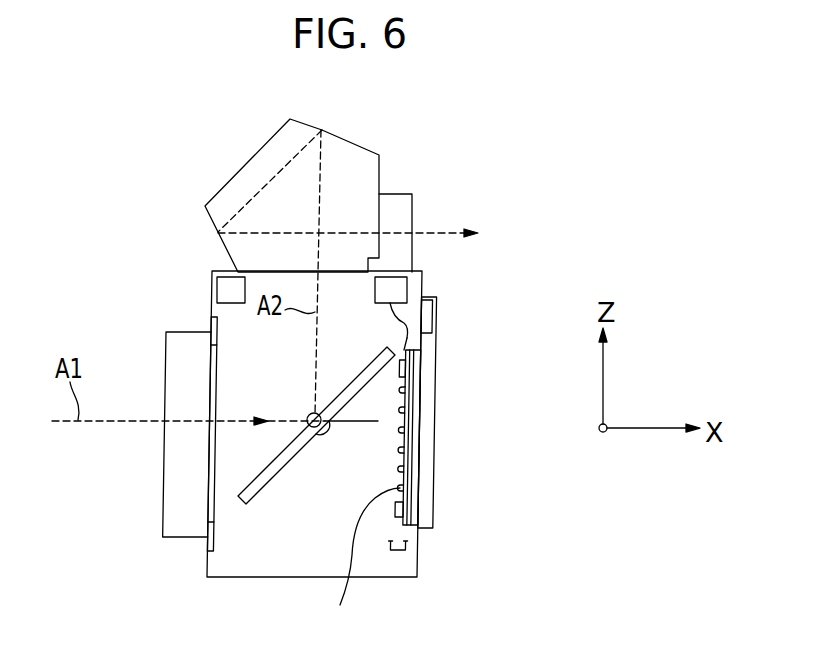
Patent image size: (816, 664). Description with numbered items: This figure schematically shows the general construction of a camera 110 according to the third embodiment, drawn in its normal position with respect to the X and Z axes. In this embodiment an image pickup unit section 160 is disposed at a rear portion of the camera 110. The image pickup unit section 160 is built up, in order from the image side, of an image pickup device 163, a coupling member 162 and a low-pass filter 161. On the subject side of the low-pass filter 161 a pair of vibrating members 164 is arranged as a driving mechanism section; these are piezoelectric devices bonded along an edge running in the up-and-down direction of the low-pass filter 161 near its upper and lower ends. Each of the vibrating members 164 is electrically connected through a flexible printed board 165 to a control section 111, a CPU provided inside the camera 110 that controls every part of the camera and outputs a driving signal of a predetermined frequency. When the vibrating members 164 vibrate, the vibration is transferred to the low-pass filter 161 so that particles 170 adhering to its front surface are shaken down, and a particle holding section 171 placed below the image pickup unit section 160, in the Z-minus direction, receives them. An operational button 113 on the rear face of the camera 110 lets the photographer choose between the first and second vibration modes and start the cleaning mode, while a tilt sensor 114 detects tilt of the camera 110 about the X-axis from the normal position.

The camera 110 is at (181, 183).
The control section 111 is at (398, 290).
The operational button 113 is at (427, 318).
The tilt sensor 114 is at (230, 293).
The image pickup unit section 160 is at (483, 415).
The low-pass filter 161 is at (452, 466).
The coupling member 162 is at (403, 410).
The image pickup device 163 is at (405, 385).
The vibrating members 164 is at (409, 358).
The flexible printed board 165 is at (404, 332).
The particles 170 is at (356, 559).
The particle holding section 171 is at (402, 552).